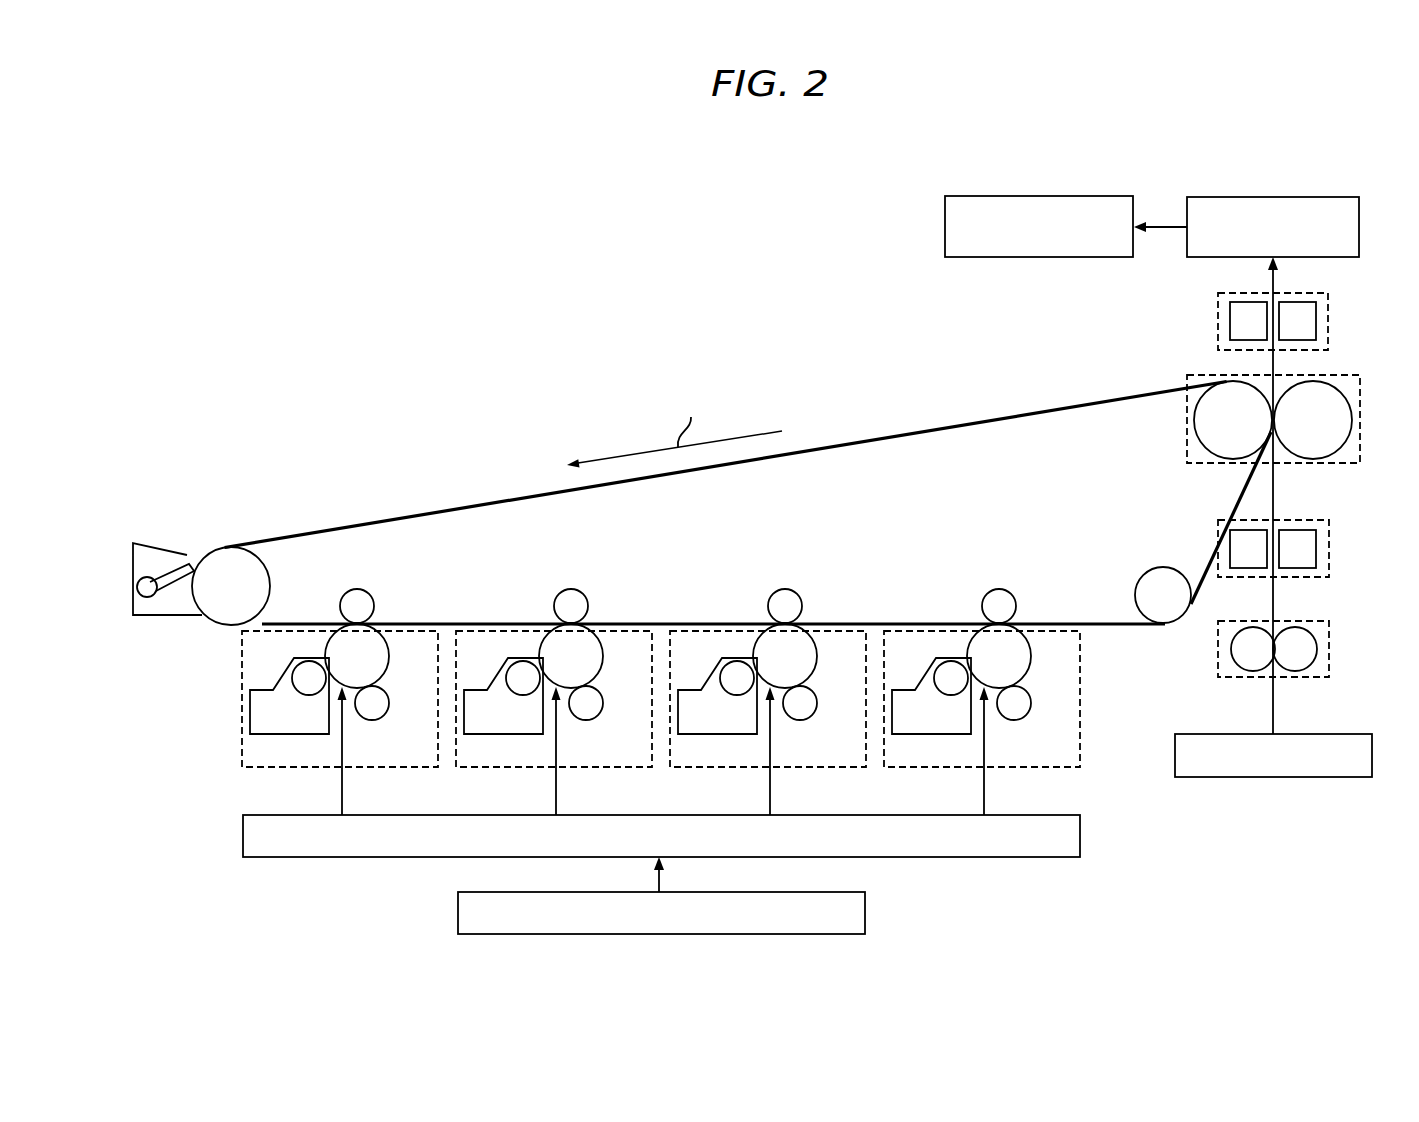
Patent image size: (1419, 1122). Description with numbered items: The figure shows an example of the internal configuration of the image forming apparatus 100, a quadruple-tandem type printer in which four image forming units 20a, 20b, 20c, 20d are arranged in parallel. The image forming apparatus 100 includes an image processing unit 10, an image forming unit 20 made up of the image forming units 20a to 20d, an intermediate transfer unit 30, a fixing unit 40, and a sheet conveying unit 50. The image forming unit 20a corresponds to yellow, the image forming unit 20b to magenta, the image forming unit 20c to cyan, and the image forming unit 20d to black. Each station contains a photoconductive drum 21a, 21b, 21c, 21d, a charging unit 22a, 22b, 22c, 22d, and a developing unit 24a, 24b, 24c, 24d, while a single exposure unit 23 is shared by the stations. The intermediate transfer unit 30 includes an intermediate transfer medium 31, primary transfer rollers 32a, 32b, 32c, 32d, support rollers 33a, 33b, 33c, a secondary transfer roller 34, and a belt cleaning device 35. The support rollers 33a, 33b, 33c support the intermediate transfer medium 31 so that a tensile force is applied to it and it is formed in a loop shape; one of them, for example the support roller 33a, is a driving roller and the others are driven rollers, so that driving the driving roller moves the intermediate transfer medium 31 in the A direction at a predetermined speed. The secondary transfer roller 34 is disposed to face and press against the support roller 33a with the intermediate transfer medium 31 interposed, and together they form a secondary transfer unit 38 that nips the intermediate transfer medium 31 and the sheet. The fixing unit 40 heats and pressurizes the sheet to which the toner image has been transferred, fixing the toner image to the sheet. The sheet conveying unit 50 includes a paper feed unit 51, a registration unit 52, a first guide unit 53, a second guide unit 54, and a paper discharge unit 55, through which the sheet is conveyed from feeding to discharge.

The image forming apparatus 100 is at (1266, 142).
The image processing unit 10 is at (806, 892).
The image forming unit 20 is at (1090, 803).
The image forming unit 20a is at (370, 768).
The image forming unit 20b is at (584, 768).
The image forming unit 20c is at (798, 768).
The image forming unit 20d is at (1012, 768).
The photoconductive drum 21a is at (389, 648).
The photoconductive drum 21b is at (603, 648).
The photoconductive drum 21c is at (817, 648).
The photoconductive drum 21d is at (1031, 648).
The charging unit 22a is at (385, 720).
The charging unit 22b is at (599, 720).
The charging unit 22c is at (813, 720).
The charging unit 22d is at (1027, 720).
The exposure unit 23 is at (260, 815).
The developing unit 24a is at (260, 734).
The developing unit 24b is at (474, 734).
The developing unit 24c is at (688, 734).
The developing unit 24d is at (902, 734).
The intermediate transfer unit 30 is at (1104, 645).
The intermediate transfer medium 31 is at (389, 519).
The primary transfer roller 32a is at (357, 589).
The primary transfer roller 32b is at (571, 589).
The primary transfer roller 32c is at (785, 589).
The primary transfer roller 32d is at (999, 589).
The support roller 33a is at (1203, 452).
The support roller 33b is at (212, 552).
The support roller 33c is at (1163, 567).
The secondary transfer roller 34 is at (1343, 452).
The belt cleaning device 35 is at (160, 548).
The secondary transfer unit 38 is at (1310, 375).
The fixing unit 40 is at (1308, 197).
The sheet conveying unit 50 is at (1330, 478).
The paper feed unit 51 is at (1318, 734).
The registration unit 52 is at (1290, 621).
The first guide unit 53 is at (1290, 520).
The second guide unit 54 is at (1290, 293).
The paper discharge unit 55 is at (1080, 196).